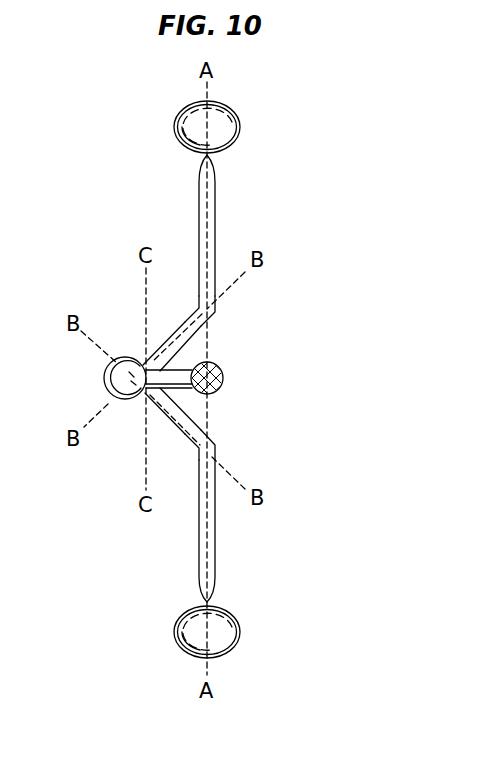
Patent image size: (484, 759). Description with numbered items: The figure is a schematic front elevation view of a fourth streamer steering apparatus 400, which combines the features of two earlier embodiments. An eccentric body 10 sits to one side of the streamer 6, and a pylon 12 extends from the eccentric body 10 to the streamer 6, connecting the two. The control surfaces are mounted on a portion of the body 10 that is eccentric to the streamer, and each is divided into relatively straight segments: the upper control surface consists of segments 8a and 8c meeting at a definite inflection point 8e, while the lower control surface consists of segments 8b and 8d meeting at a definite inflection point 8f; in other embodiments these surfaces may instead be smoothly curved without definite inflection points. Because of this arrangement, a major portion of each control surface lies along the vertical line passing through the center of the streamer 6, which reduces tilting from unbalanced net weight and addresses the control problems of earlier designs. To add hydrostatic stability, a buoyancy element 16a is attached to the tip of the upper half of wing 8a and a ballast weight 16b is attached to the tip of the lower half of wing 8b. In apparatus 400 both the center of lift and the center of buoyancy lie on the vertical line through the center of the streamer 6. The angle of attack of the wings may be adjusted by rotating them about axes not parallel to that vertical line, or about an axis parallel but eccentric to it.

The streamer steering apparatus 400 is at (264, 192).
The buoyancy element 16a is at (174, 126).
The ballast weight 16b is at (174, 632).
The control surface 8a is at (199, 192).
The control surface 8b is at (199, 553).
The control surface 8c is at (178, 329).
The control surface 8d is at (178, 433).
The inflection point 8e is at (216, 311).
The inflection point 8f is at (214, 450).
The eccentric body 10 is at (103, 380).
The pylon 12 is at (184, 371).
The streamer 6 is at (216, 392).